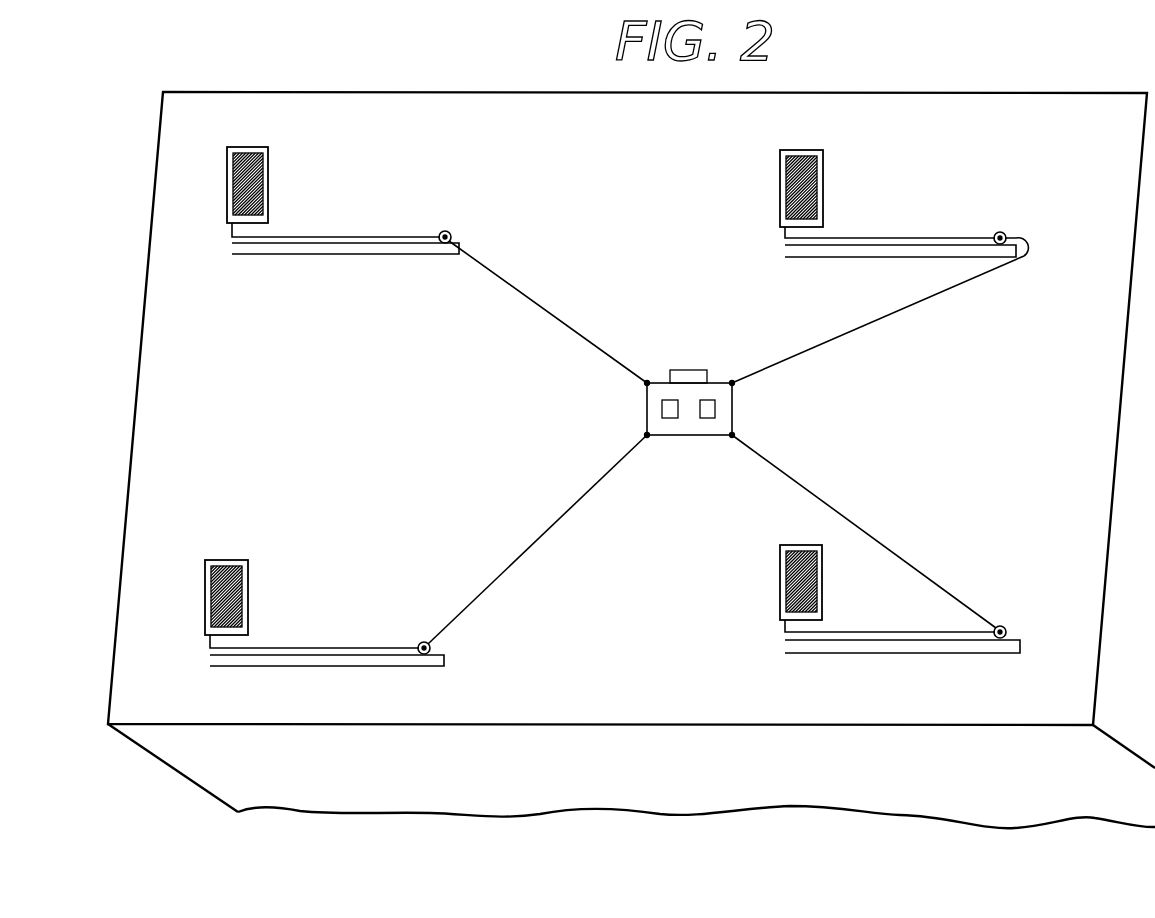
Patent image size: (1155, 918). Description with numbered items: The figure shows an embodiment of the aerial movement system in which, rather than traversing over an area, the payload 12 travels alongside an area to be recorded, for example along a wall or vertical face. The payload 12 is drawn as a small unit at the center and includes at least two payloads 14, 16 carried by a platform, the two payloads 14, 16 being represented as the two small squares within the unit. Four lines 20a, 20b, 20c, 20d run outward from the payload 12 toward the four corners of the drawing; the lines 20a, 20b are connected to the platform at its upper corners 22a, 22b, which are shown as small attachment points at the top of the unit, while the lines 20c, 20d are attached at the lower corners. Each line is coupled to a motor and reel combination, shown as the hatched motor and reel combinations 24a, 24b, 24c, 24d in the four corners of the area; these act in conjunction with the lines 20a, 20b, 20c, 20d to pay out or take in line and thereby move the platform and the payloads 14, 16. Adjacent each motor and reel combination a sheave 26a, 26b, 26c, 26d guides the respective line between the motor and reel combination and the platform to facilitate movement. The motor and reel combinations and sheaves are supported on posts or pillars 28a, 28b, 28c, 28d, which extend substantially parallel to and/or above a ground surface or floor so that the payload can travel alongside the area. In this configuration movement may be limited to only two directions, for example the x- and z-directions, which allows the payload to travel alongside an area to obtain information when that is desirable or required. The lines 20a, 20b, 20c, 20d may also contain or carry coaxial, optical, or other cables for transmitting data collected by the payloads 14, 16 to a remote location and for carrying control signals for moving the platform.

The payload 12 is at (688, 455).
The payload 14 is at (661, 409).
The payload 16 is at (712, 410).
The line 20a is at (516, 289).
The line 20b is at (893, 317).
The line 20c is at (816, 495).
The line 20d is at (511, 566).
The corner 22a is at (647, 381).
The corner 22b is at (734, 385).
The motor and reel combination 24a is at (268, 187).
The motor and reel combination 24b is at (780, 187).
The motor and reel combination 24c is at (780, 570).
The motor and reel combination 24d is at (248, 578).
The sheave 26a is at (444, 230).
The sheave 26b is at (1000, 231).
The sheave 26c is at (1000, 625).
The sheave 26d is at (424, 641).
The post or pillar 28a is at (360, 256).
The post or pillar 28b is at (912, 250).
The post or pillar 28c is at (900, 653).
The post or pillar 28d is at (320, 668).